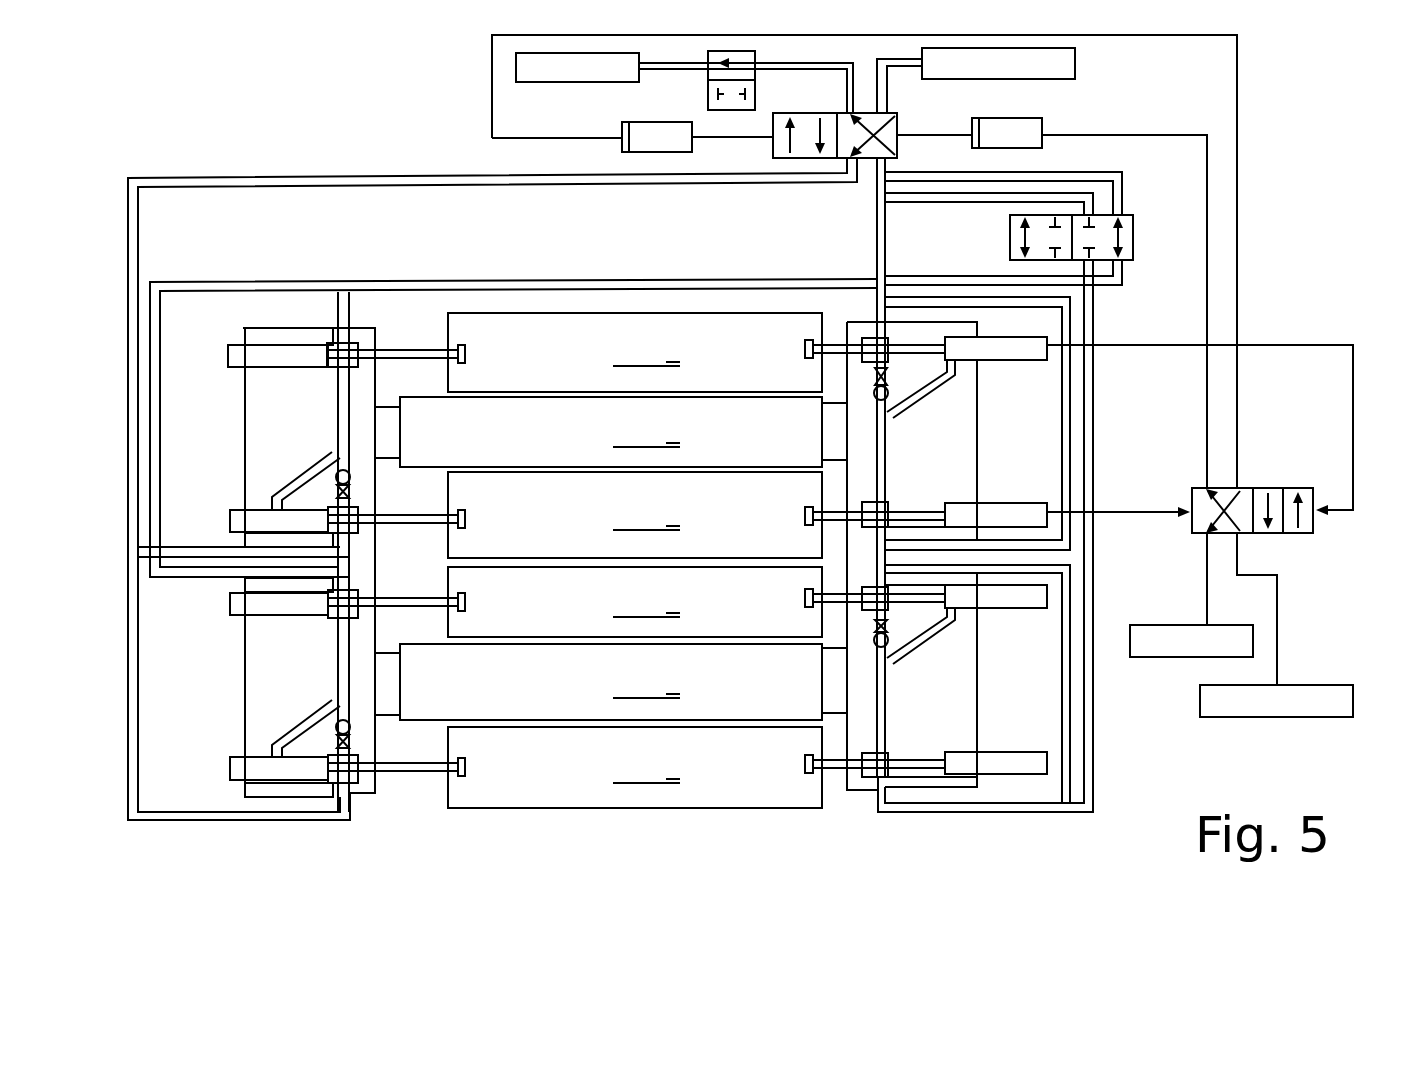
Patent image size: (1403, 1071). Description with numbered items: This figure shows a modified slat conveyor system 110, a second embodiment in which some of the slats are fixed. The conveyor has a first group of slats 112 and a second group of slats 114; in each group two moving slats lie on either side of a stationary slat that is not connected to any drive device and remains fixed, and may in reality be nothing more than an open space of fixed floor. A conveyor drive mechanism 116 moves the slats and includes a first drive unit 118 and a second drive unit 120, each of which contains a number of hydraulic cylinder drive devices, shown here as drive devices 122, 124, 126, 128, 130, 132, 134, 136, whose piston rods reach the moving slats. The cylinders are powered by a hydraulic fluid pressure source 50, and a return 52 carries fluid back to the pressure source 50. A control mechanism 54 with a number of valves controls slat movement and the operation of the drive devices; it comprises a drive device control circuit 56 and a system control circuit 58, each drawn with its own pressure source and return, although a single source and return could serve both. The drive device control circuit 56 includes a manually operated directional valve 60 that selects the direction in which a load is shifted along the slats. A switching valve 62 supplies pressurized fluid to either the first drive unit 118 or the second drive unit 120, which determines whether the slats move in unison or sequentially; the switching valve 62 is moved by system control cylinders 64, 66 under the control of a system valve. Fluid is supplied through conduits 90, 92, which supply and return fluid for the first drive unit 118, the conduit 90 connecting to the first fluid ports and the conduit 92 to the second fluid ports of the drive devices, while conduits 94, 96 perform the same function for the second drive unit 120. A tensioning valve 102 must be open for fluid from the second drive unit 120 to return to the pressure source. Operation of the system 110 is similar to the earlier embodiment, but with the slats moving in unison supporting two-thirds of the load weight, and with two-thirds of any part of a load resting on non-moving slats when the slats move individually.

The hydraulic fluid pressure source 50 is at (1075, 66).
The return 52 is at (574, 84).
The control mechanism 54 is at (1299, 315).
The drive device control circuit 56 is at (856, 210).
The system control circuit 58 is at (1172, 342).
The directional valve 60 is at (1010, 238).
The switching valve 62 is at (897, 127).
The system control cylinder 64 is at (1013, 118).
The system control cylinder 66 is at (660, 122).
The conduit 90 is at (413, 278).
The conduit 92 is at (390, 188).
The conduit 94 is at (1085, 383).
The conduit 96 is at (1090, 475).
The tensioning valve 102 is at (756, 106).
The modified system 110 is at (286, 168).
The first group of slats 112 is at (738, 814).
The second group of slats 114 is at (541, 306).
The conveyor drive mechanism 116 is at (1114, 763).
The first drive unit 118 is at (364, 804).
The second drive unit 120 is at (986, 697).
The drive device 122 is at (268, 376).
The drive device 124 is at (261, 500).
The drive device 126 is at (270, 624).
The drive device 128 is at (261, 747).
The drive device 130 is at (990, 369).
The drive device 132 is at (1005, 497).
The drive device 134 is at (990, 616).
The drive device 136 is at (990, 746).